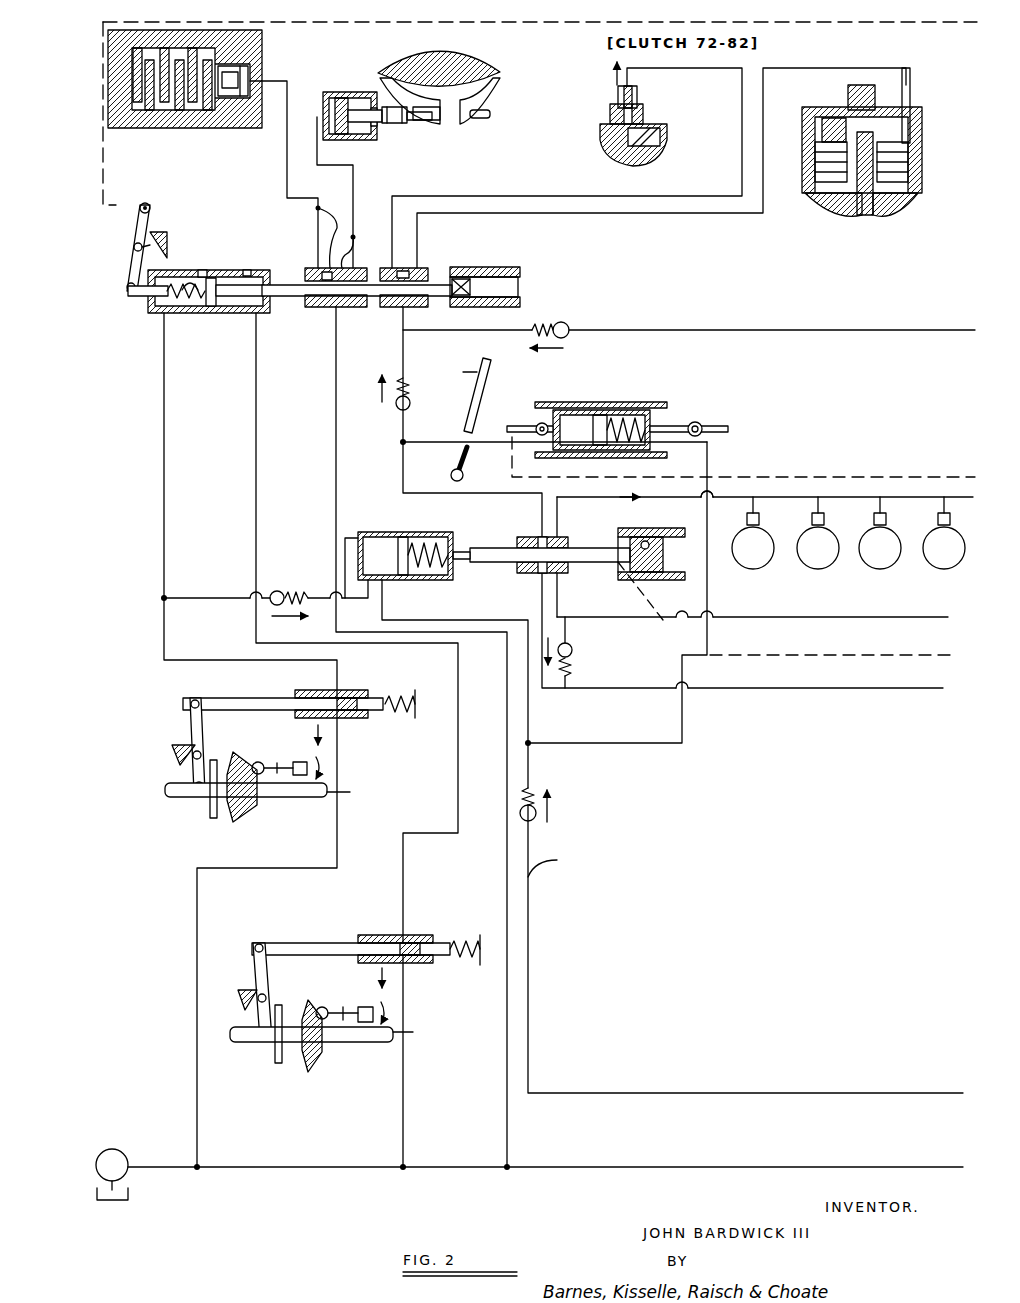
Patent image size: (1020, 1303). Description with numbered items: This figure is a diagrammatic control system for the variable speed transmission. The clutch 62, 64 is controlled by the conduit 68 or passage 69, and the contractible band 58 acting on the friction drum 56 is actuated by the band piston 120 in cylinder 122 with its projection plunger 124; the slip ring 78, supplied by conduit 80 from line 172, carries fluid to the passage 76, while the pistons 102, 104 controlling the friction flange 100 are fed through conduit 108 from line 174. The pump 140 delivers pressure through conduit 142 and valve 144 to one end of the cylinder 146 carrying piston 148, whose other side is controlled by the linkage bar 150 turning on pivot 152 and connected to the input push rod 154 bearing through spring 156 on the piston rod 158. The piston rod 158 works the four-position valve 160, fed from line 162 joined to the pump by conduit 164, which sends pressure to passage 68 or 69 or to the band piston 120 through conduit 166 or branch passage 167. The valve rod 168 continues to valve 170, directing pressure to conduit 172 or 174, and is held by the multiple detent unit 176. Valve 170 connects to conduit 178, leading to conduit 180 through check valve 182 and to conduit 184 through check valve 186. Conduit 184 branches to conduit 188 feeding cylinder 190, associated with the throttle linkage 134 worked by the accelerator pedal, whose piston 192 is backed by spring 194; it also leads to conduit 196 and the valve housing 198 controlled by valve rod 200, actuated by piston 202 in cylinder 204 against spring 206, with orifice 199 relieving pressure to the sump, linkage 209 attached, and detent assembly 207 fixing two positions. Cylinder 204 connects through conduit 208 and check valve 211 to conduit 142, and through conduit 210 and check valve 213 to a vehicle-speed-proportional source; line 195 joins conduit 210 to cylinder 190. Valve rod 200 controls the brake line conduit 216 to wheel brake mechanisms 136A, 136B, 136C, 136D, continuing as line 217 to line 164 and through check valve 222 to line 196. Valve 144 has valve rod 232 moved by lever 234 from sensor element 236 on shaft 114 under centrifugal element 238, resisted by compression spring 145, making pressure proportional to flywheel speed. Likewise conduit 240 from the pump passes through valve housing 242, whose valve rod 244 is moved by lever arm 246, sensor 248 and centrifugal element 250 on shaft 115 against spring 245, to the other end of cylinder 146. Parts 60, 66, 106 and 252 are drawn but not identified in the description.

The friction drum 56 is at (443, 67).
The contractible band 58 is at (377, 77).
The clutch member 60 is at (608, 150).
The clutch 62 is at (185, 106).
The clutch 64 is at (167, 105).
The clutch piston 66 is at (232, 96).
The conduit 68 is at (282, 81).
The passage 69 is at (332, 210).
The passage 76 is at (658, 158).
The slip ring 78 is at (643, 108).
The conduit 80 is at (618, 87).
The friction flange 100 is at (868, 197).
The piston 102 is at (813, 170).
The piston 104 is at (893, 156).
The actuator coil 106 is at (920, 172).
The conduit 108 is at (912, 100).
The shaft 114 is at (278, 790).
The shaft 115 is at (350, 1037).
The band piston 120 is at (340, 128).
The cylinder 122 is at (362, 100).
The projection plunger 124 is at (414, 120).
The throttle linkage 134 is at (512, 436).
The wheel brake mechanism 136A is at (750, 567).
The wheel brake mechanism 136B is at (815, 567).
The wheel brake mechanism 136C is at (880, 567).
The wheel brake mechanism 136D is at (945, 567).
The pump 140 is at (120, 1147).
The conduit 142 is at (162, 540).
The valve 144 is at (348, 690).
The compression spring 145 is at (402, 697).
The cylinder 146 is at (183, 265).
The piston 148 is at (211, 267).
The linkage bar 150 is at (148, 222).
The pivot 152 is at (135, 250).
The input push rod 154 is at (142, 297).
The spring 156 is at (200, 292).
The piston rod 158 is at (245, 288).
The valve 160 is at (322, 303).
The line 162 is at (334, 468).
The conduit 164 is at (320, 1167).
The conduit 166 is at (355, 190).
The branch passage 167 is at (355, 237).
The valve rod 168 is at (290, 283).
The valve 170 is at (410, 267).
The conduit 172 is at (483, 195).
The conduit 174 is at (500, 214).
The multiple detent unit 176 is at (475, 268).
The conduit 178 is at (402, 323).
The conduit 180 is at (665, 330).
The check valve 182 is at (583, 308).
The conduit 184 is at (400, 430).
The check valve 186 is at (412, 392).
The conduit 188 is at (430, 440).
The cylinder 190 is at (573, 410).
The piston 192 is at (607, 418).
The spring 194 is at (677, 417).
The line 195 is at (710, 462).
The conduit 196 is at (402, 467).
The valve housing 198 is at (532, 535).
The orifice 199 is at (355, 536).
The valve rod 200 is at (493, 547).
The piston 202 is at (407, 540).
The cylinder 204 is at (383, 580).
The spring 206 is at (453, 578).
The detent assembly 207 is at (645, 580).
The conduit 208 is at (212, 588).
The linkage 209 is at (877, 652).
The conduit 210 is at (529, 772).
The check valve 211 is at (283, 592).
The check valve 213 is at (545, 810).
The brake line conduit 216 is at (652, 497).
The line 217 is at (793, 617).
The check valve 222 is at (580, 640).
The valve rod 232 is at (255, 700).
The lever 234 is at (192, 728).
The sensor element 236 is at (228, 817).
The centrifugal element 238 is at (287, 757).
The conduit 240 is at (255, 443).
The valve housing 242 is at (425, 937).
The valve rod 244 is at (322, 927).
The compression spring 245 is at (457, 960).
The lever arm 246 is at (265, 977).
The sensor 248 is at (293, 1055).
The centrifugal element 250 is at (357, 1007).
The linkage 252 is at (813, 480).